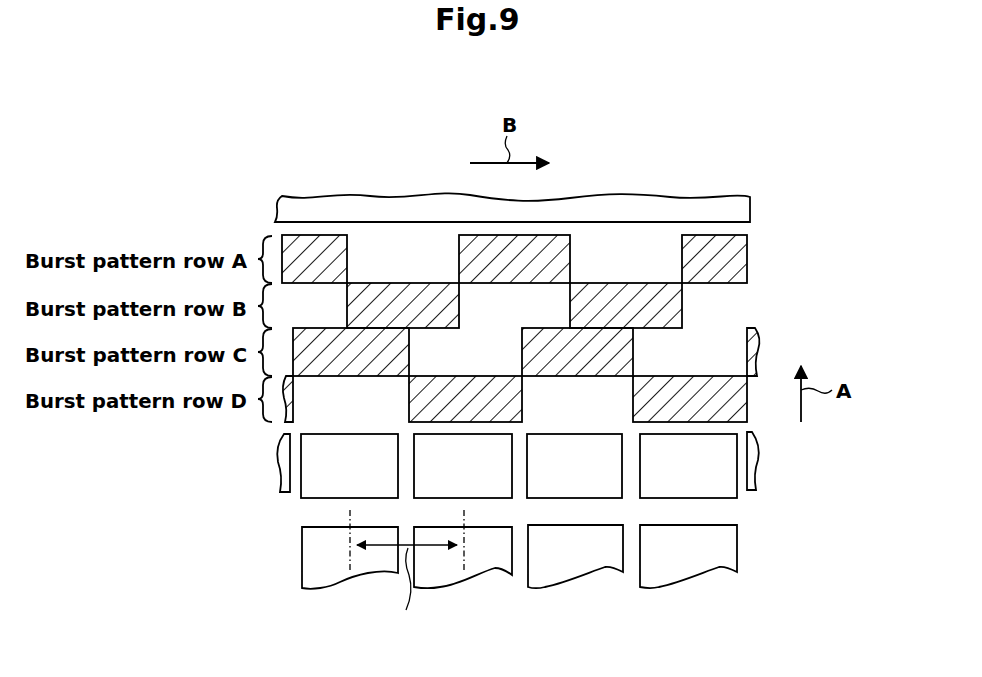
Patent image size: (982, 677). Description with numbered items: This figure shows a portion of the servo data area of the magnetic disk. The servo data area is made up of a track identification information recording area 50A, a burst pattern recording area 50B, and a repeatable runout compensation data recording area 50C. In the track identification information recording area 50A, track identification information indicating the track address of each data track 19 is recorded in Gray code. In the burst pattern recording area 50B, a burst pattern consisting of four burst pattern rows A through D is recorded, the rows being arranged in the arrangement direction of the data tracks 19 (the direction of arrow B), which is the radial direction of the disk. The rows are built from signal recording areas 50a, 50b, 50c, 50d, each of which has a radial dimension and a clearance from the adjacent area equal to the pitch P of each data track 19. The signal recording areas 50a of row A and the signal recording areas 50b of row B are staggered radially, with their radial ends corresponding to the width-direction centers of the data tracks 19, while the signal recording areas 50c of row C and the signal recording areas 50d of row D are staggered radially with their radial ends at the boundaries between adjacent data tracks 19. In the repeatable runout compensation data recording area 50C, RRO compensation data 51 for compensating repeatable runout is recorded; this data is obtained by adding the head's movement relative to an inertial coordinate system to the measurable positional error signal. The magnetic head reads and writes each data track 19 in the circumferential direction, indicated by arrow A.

The track identification information recording area 50A is at (631, 197).
The burst pattern recording area 50B is at (601, 278).
The repeatable runout (RRO) compensation data recording area 50C is at (598, 479).
The signal recording area 50a is at (458, 283).
The signal recording area 50b is at (570, 302).
The signal recording area 50c is at (521, 352).
The signal recording area 50d is at (408, 398).
The RRO compensation data 51 is at (360, 499).
The data track 19 is at (322, 583).